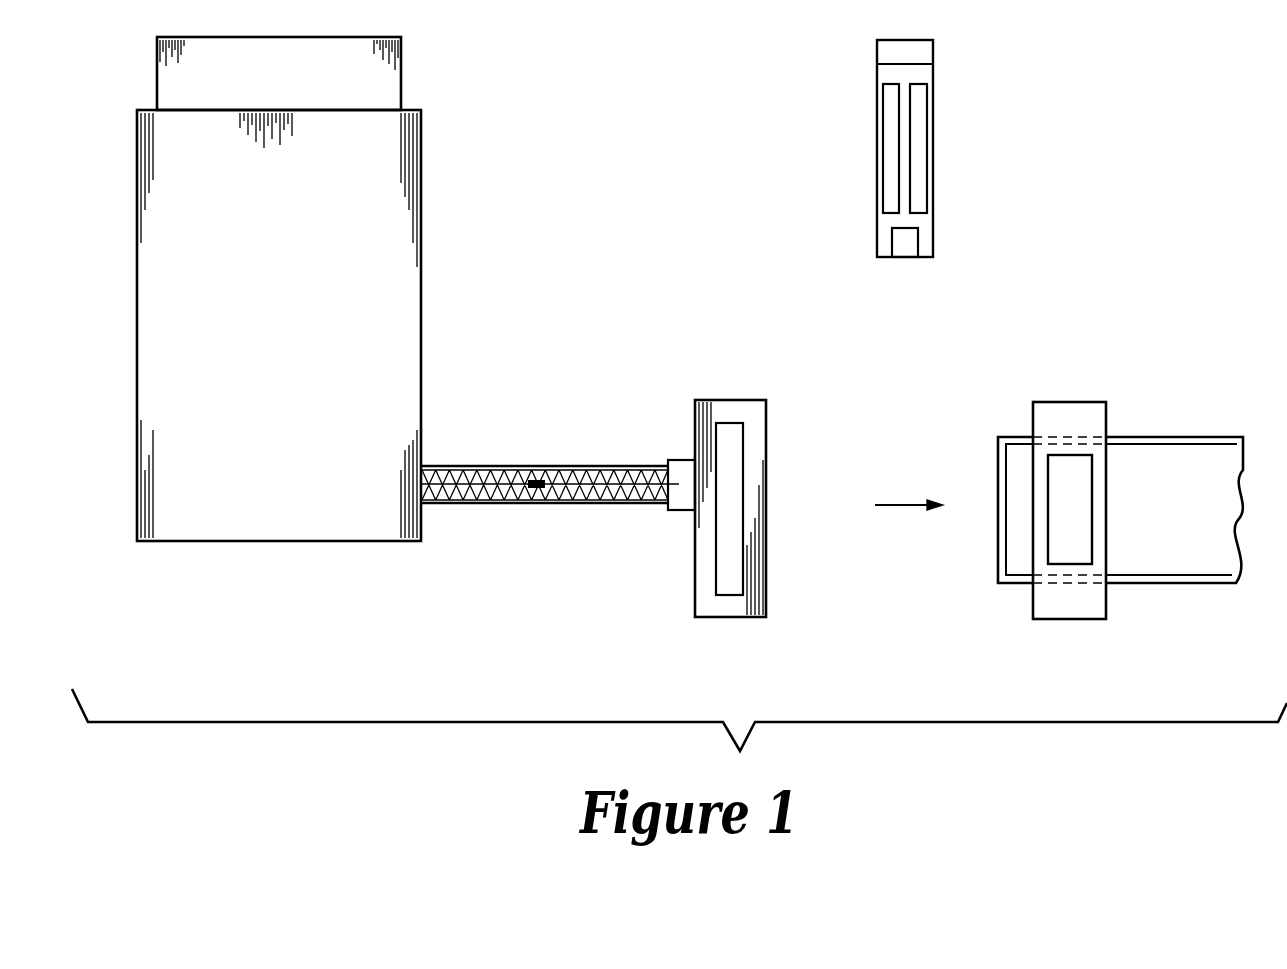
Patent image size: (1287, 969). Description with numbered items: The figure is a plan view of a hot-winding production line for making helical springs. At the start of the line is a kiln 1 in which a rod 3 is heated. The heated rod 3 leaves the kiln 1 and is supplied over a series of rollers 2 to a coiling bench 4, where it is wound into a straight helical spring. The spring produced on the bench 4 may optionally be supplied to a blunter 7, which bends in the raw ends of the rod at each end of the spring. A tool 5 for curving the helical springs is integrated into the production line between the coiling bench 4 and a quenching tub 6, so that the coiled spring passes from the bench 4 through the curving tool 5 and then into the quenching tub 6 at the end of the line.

The kiln 1 is at (175, 334).
The rollers 2 is at (487, 503).
The rod 3 is at (537, 500).
The coiling bench 4 is at (728, 578).
The tool 5 is at (1062, 603).
The quenching tub 6 is at (1213, 561).
The blunter 7 is at (902, 306).